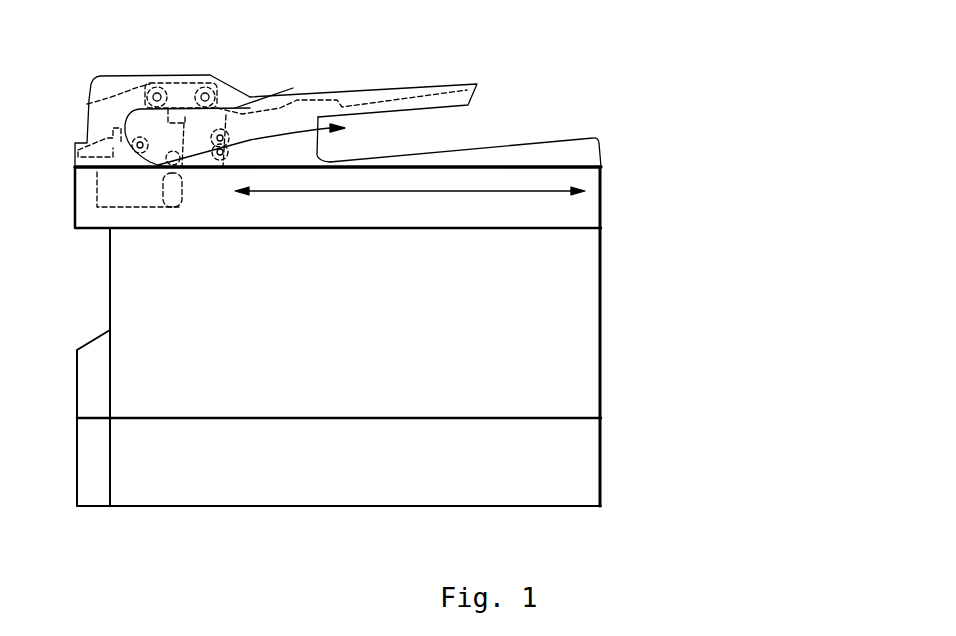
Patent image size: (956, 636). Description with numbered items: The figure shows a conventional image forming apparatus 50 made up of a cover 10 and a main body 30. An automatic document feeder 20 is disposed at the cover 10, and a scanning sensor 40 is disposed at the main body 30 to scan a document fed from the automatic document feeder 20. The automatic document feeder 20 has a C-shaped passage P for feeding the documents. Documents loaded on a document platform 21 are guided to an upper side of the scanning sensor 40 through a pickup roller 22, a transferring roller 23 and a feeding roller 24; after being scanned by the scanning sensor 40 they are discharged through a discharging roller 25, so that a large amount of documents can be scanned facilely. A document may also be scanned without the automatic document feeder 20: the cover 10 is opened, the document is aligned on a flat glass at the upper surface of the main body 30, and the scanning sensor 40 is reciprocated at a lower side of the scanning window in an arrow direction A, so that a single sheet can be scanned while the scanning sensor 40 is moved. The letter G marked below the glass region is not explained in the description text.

The cover 10 is at (597, 155).
The automatic document feeder 20 is at (231, 64).
The document platform 21 is at (451, 86).
The pickup roller 22 is at (200, 83).
The transferring roller 23 is at (87, 104).
The feeding roller 24 is at (78, 150).
The discharging roller 25 is at (222, 170).
The main body 30 is at (594, 306).
The scanning sensor 40 is at (107, 198).
The image forming apparatus 50 is at (570, 45).
The C-shaped passage P is at (263, 96).
The glass / reading window G is at (172, 207).
The arrow direction A is at (400, 198).